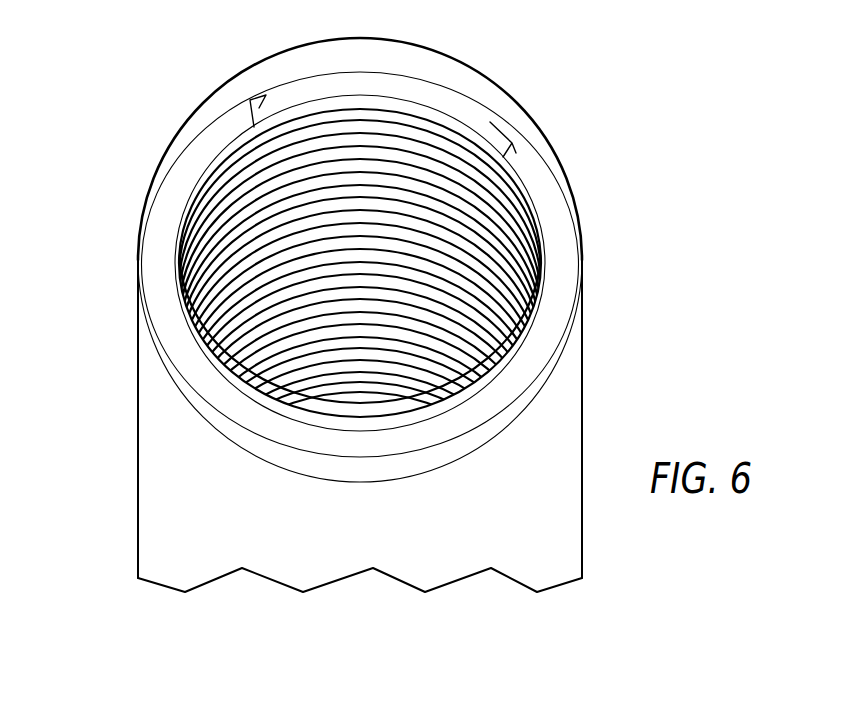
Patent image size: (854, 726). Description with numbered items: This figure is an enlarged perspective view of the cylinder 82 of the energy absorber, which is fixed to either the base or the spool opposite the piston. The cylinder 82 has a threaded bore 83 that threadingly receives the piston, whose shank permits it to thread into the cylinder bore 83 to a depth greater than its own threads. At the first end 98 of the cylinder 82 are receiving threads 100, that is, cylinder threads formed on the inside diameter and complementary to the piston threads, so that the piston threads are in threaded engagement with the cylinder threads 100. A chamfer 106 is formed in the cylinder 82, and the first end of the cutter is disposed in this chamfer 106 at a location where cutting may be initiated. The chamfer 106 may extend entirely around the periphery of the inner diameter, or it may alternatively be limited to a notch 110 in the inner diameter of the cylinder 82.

The cylinder 82 is at (138, 423).
The first end 98 is at (555, 200).
The receiving threads 100 is at (207, 237).
The threaded bore 83 is at (230, 185).
The notch 110 is at (266, 95).
The chamfer 106 is at (492, 123).